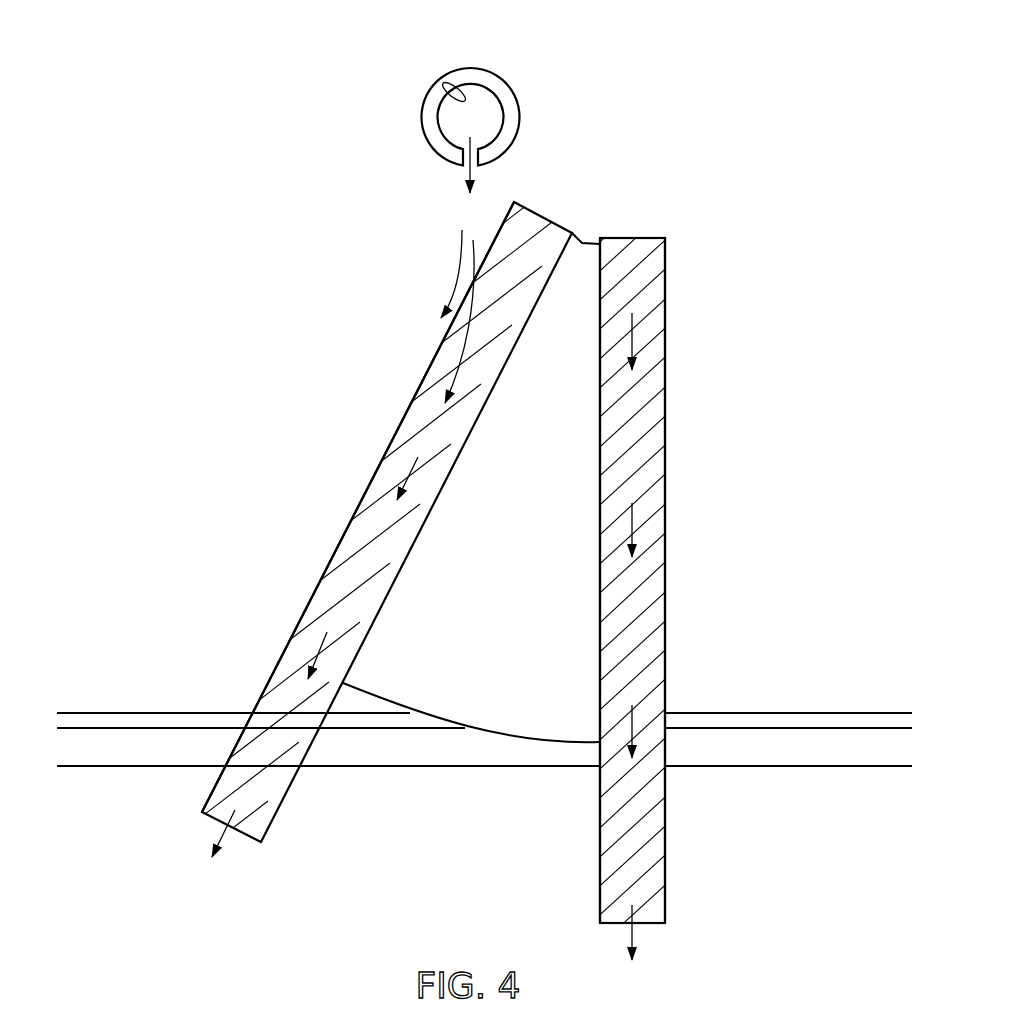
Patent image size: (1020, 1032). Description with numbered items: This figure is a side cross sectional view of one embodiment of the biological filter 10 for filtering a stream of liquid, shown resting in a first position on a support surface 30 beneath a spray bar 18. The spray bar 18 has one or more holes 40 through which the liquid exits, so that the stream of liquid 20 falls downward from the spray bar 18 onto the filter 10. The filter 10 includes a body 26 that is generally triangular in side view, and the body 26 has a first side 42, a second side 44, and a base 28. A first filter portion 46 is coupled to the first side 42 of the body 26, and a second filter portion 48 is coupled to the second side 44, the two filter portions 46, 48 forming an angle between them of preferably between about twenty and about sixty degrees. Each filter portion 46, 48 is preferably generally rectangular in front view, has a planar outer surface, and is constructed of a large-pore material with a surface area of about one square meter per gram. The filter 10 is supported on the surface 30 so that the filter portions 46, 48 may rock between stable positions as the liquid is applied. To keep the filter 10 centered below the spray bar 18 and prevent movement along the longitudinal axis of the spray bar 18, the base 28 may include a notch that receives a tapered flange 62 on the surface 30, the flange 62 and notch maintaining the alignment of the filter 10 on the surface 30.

The biological filter 10 is at (333, 202).
The spray bar 18 is at (512, 102).
The stream of liquid 20 is at (475, 173).
The body 26 is at (585, 627).
The base 28 is at (363, 693).
The surface 30 is at (784, 757).
The holes 40 is at (462, 143).
The first side 42 is at (455, 460).
The second side 44 is at (598, 366).
The first filter portion 46 is at (350, 538).
The second filter portion 48 is at (665, 426).
The tapered flange 62 is at (852, 717).